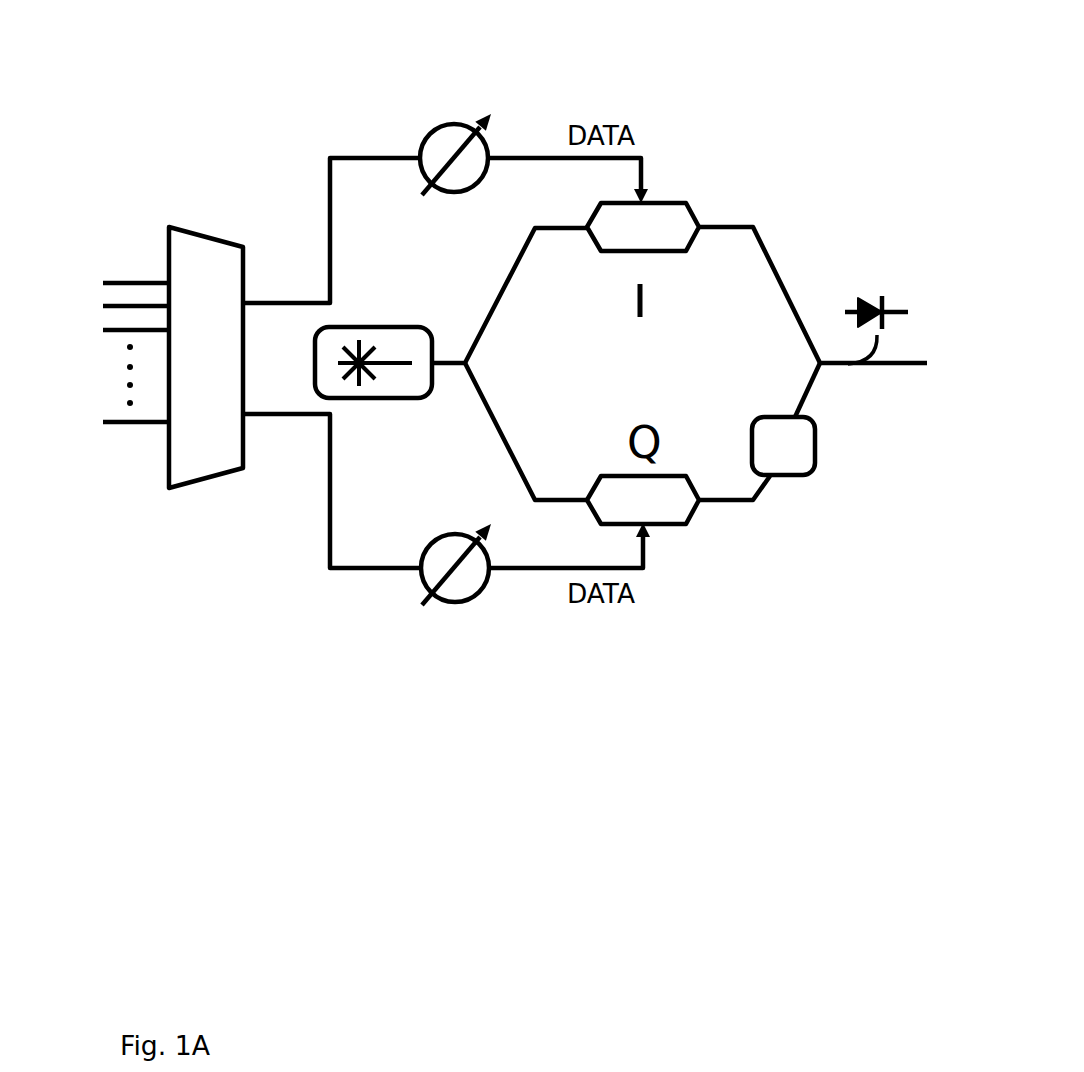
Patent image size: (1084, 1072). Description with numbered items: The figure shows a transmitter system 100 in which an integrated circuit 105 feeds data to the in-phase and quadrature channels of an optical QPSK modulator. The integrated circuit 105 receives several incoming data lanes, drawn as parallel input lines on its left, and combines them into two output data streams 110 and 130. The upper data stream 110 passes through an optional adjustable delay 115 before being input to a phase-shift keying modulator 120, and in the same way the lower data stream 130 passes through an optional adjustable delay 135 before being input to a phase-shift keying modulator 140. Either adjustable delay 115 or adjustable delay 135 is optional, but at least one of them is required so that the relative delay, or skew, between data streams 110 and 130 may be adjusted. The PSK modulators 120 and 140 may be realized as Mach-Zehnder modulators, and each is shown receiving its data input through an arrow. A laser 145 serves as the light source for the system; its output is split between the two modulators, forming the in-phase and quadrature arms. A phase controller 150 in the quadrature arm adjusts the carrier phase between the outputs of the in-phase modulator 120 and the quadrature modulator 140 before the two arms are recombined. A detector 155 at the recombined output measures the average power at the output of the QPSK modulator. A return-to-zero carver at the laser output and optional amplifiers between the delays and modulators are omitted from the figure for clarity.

The transmitter system 100 is at (280, 74).
The integrated circuit 105 is at (184, 226).
The data stream 110 is at (343, 153).
The adjustable delay 115 is at (455, 122).
The phase-shift keying modulator 120 is at (677, 197).
The data stream 130 is at (353, 563).
The adjustable delay 135 is at (453, 533).
The phase-shift keying modulator 140 is at (680, 470).
The laser 145 is at (372, 325).
The phase controller 150 is at (813, 476).
The detector 155 is at (872, 295).